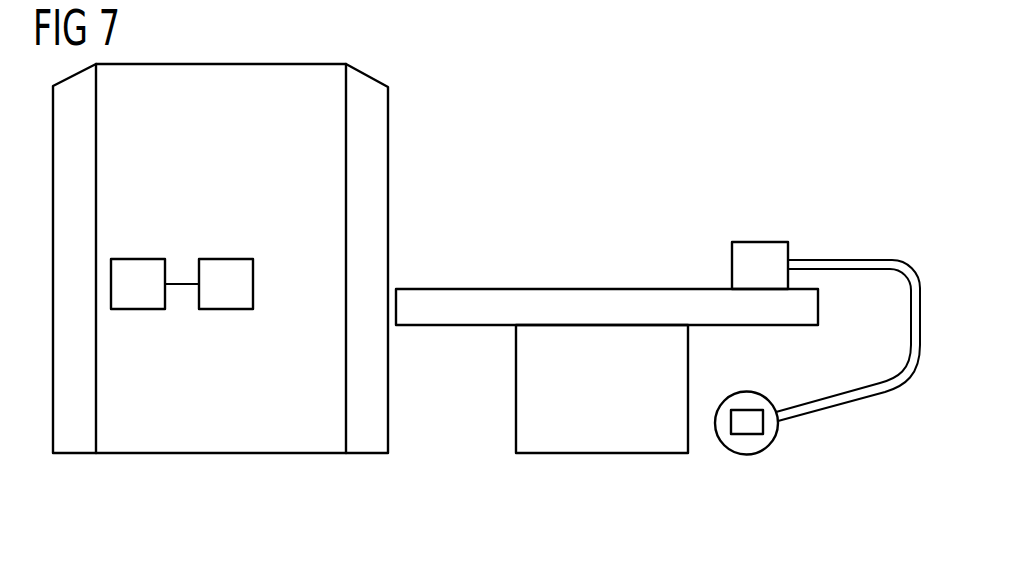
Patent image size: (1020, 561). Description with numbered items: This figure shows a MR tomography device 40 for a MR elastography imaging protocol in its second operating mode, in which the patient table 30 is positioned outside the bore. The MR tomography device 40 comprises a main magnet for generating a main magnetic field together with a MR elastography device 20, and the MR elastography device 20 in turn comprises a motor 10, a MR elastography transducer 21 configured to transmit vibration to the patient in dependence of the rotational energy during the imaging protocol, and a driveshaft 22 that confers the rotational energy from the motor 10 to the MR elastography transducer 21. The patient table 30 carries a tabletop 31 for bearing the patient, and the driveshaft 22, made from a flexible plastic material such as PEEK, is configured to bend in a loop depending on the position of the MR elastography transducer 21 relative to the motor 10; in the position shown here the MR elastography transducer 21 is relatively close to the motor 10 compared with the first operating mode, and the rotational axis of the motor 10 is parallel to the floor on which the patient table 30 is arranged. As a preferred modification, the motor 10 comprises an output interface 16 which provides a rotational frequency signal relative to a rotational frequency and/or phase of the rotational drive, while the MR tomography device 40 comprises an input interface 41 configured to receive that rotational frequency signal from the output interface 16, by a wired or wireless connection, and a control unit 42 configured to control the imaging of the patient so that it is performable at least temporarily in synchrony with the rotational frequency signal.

The motor 10 is at (776, 435).
The output interface 16 is at (743, 410).
The MR elastography device 20 is at (588, 157).
The MR elastography transducer 21 is at (757, 242).
The driveshaft 22 is at (821, 265).
The patient table 30 is at (508, 425).
The tabletop 31 is at (627, 298).
The MR tomography device 40 is at (327, 127).
The input interface 41 is at (138, 259).
The control unit 42 is at (226, 259).